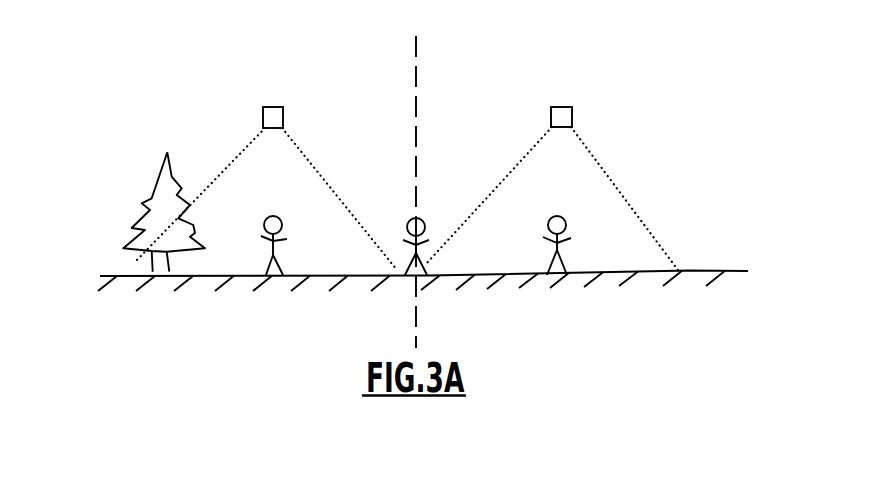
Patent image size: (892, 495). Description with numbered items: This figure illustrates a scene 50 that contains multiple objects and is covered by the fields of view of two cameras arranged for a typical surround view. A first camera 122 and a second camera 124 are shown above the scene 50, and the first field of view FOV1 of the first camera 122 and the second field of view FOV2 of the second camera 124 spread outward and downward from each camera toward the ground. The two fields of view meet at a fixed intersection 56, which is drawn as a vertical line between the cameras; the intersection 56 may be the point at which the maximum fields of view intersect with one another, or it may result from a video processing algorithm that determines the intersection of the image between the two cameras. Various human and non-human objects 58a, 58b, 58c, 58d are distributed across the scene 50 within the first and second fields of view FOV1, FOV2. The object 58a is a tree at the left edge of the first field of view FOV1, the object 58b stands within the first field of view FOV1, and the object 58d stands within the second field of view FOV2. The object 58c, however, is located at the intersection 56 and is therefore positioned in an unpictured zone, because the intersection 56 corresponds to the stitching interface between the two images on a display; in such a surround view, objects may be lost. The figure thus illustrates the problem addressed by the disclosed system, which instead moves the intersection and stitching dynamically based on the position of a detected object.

The scene 50 is at (678, 157).
The intersection 56 is at (417, 79).
The object 58a is at (142, 202).
The object 58b is at (277, 249).
The object 58c is at (424, 215).
The object 58d is at (561, 250).
The first camera 122 is at (278, 107).
The second camera 124 is at (562, 107).
The first field of view FOV1 is at (227, 161).
The second field of view FOV2 is at (645, 220).